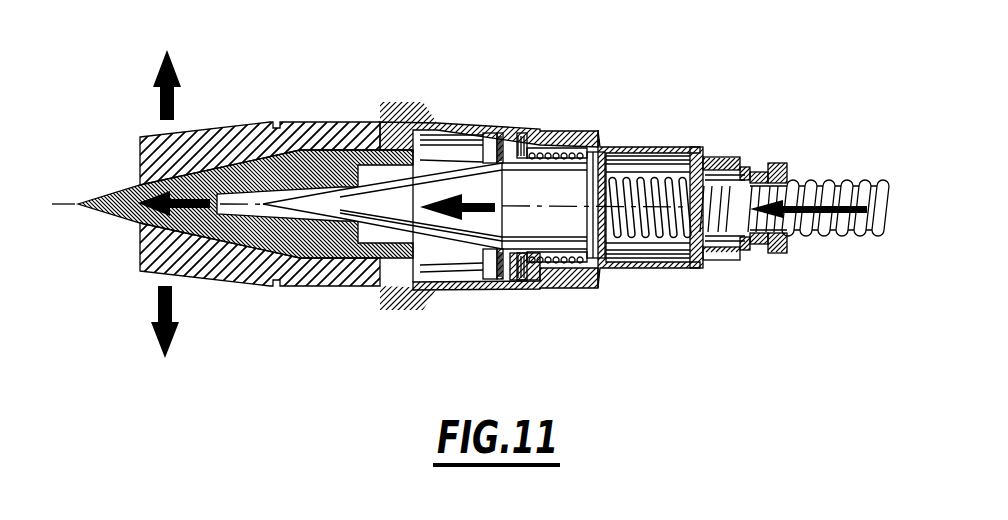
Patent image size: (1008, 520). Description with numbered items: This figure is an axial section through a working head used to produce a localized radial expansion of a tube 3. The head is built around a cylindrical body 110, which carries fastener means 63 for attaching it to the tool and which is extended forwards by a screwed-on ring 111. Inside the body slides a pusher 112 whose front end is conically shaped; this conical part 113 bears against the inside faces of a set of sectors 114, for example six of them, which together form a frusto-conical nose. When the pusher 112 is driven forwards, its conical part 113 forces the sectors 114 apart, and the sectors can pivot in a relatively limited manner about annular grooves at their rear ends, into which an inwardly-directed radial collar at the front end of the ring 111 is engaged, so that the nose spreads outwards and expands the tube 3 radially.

The hose 3 is at (843, 183).
The fastener means 63 is at (780, 126).
The cylindrical body 110 is at (600, 129).
The screwed-on ring 111 is at (477, 121).
The pusher 112 is at (458, 250).
The conical part 113 is at (336, 165).
The sectors 114 is at (197, 150).